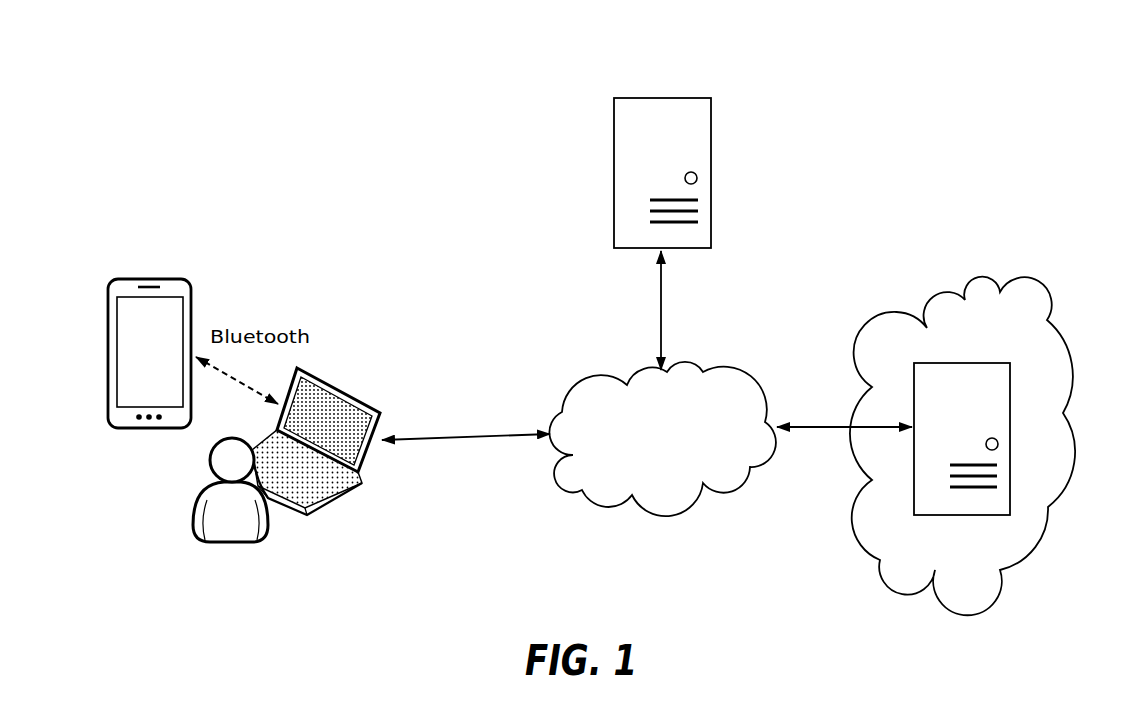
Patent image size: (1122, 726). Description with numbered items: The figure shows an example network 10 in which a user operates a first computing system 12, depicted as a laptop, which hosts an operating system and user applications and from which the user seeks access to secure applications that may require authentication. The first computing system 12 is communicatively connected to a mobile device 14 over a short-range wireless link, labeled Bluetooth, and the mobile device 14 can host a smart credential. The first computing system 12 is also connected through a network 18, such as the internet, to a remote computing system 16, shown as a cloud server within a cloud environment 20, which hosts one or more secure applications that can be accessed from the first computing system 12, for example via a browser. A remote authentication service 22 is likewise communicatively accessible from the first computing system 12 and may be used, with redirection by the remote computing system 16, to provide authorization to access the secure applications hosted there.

The network 10 is at (180, 642).
The first computing system 12 is at (353, 402).
The mobile device 14 is at (112, 302).
The remote computing system 16 is at (985, 363).
The network 18 is at (650, 451).
The cloud computing environment 20 is at (888, 317).
The remote authentication service 22 is at (700, 97).